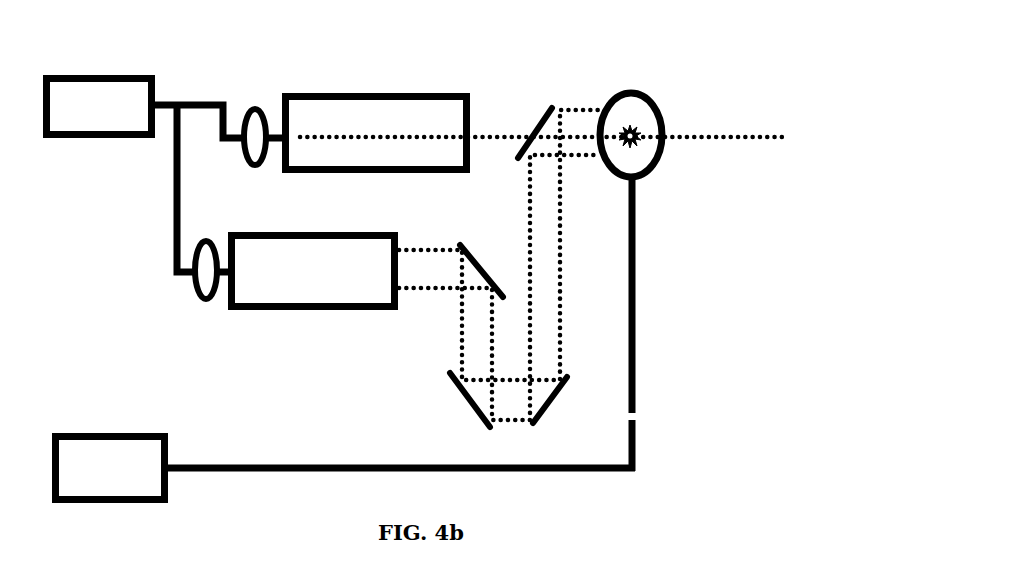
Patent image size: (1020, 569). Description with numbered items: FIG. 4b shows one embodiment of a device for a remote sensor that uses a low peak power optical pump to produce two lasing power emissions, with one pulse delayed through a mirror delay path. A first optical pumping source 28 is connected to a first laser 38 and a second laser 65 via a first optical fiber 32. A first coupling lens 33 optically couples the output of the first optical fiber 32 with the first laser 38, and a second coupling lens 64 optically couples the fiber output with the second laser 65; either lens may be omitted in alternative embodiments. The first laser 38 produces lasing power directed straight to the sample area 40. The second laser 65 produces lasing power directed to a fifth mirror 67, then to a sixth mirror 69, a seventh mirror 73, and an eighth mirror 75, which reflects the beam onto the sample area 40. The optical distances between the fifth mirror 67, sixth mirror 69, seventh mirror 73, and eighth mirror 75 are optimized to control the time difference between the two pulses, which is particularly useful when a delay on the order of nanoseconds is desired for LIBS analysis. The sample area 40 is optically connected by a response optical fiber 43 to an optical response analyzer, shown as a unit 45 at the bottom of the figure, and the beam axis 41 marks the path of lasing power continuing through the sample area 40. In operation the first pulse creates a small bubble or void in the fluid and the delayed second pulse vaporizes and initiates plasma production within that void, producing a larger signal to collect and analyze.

The first optical pumping source 28 is at (89, 115).
The first optical fiber 32 is at (229, 95).
The first coupling lens 33 is at (264, 103).
The first laser 38 is at (407, 91).
The sample area 40 is at (650, 95).
The optical axis / beam path 41 is at (760, 141).
The response optical fiber 43 is at (638, 205).
The detector / control unit 45 is at (100, 477).
The second coupling lens 64 is at (203, 304).
The second laser 65 is at (303, 271).
The fifth mirror 67 is at (471, 251).
The sixth mirror 69 is at (456, 399).
The seventh mirror 73 is at (554, 403).
The eighth mirror 75 is at (531, 127).